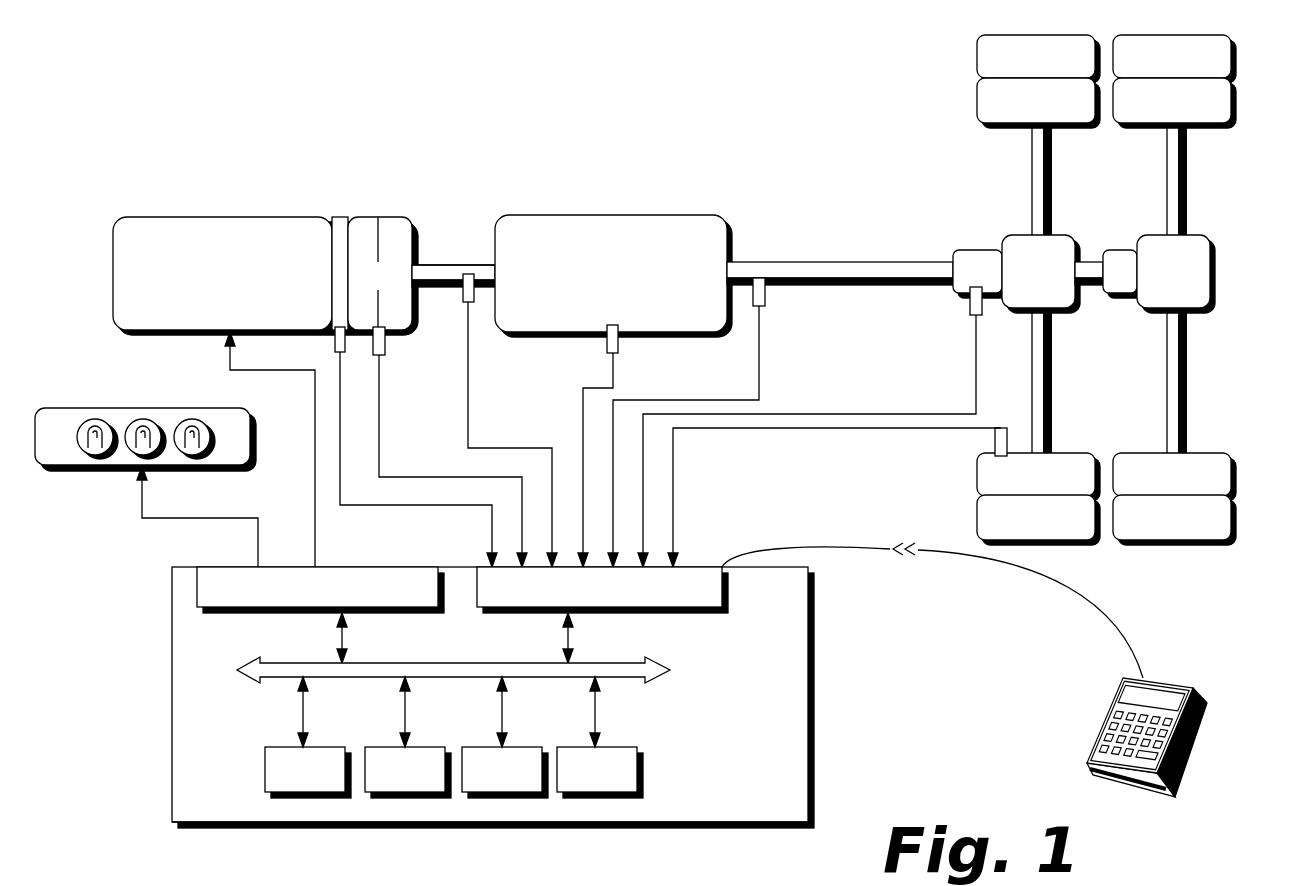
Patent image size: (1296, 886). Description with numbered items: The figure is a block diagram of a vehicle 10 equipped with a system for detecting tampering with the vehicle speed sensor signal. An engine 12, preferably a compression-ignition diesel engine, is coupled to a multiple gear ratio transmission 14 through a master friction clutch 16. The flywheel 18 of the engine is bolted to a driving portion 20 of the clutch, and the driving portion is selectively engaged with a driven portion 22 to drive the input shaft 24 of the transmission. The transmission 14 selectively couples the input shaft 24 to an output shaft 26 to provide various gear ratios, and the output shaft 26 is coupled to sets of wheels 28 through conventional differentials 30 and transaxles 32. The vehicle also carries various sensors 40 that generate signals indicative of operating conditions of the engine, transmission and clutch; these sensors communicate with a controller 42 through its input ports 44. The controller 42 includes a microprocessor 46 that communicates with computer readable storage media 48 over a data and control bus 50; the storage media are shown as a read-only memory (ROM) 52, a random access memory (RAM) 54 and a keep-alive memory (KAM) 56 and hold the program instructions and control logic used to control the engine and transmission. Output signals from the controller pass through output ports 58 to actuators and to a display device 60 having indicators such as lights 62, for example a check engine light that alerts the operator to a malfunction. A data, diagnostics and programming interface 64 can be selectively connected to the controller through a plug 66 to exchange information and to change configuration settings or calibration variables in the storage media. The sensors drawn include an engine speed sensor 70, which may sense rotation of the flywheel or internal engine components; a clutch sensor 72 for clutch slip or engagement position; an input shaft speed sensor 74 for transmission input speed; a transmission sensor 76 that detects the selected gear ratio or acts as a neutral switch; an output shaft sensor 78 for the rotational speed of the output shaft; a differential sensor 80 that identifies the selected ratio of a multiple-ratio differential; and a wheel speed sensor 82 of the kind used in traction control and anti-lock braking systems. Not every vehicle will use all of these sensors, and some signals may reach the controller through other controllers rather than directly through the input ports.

The vehicle 10 is at (736, 76).
The engine 12 is at (170, 216).
The transmission 14 is at (668, 213).
The master friction clutch 16 is at (382, 206).
The flywheel 18 is at (337, 216).
The driving portion 20 is at (357, 216).
The driven portion 22 is at (416, 236).
The input shaft 24 is at (447, 263).
The output shaft 26 is at (840, 262).
The wheels 28 is at (965, 92).
The differentials 30 is at (1220, 303).
The transaxles 32 is at (1052, 192).
The sensors 40 is at (570, 360).
The controller 42 is at (815, 704).
The input ports 44 is at (722, 611).
The microprocessor 46 is at (265, 775).
The computer readable storage media 48 is at (402, 816).
The data and control bus 50 is at (470, 661).
The read only memory (ROM) 52 is at (507, 746).
The random access memory (RAM) 54 is at (643, 772).
The keep-alive memory (KAM) 56 is at (412, 746).
The output ports 58 is at (238, 612).
The display device 60 is at (85, 474).
The lights 62 is at (122, 400).
The data, diagnostics, and programming interface 64 is at (1205, 718).
The plug 66 is at (910, 577).
The engine speed sensor 70 is at (335, 353).
The clutch sensor 72 is at (383, 356).
The input shaft speed sensor 74 is at (466, 303).
The transmission sensor 76 is at (618, 353).
The output shaft sensor 78 is at (765, 306).
The differential sensor 80 is at (970, 315).
The wheel speed sensor 82 is at (995, 445).